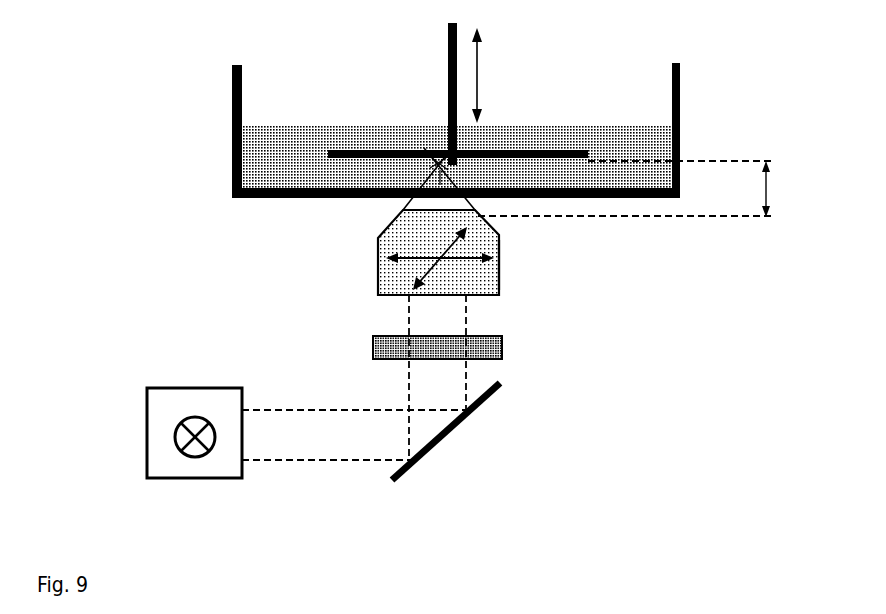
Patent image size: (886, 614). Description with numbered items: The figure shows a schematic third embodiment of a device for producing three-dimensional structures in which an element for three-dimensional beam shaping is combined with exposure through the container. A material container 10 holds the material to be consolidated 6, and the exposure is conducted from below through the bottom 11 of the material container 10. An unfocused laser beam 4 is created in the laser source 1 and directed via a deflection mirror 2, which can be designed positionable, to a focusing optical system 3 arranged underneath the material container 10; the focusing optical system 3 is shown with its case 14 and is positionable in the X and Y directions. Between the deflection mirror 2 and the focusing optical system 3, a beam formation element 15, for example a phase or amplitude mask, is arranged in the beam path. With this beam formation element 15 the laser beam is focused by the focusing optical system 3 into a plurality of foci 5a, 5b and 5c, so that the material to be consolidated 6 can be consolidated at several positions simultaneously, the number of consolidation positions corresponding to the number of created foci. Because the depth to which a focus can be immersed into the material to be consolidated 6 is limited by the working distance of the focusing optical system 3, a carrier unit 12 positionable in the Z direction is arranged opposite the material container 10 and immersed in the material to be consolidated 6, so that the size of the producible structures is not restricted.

The laser source 1 is at (163, 410).
The deflection mirror 2 is at (443, 440).
The focusing optical system 3 is at (478, 283).
The unfocused laser beam 4 is at (322, 443).
The focus 5a is at (435, 157).
The focus 5b is at (438, 152).
The focus 5c is at (463, 152).
The material to be consolidated 6 is at (623, 163).
The material container 10 is at (214, 167).
The bottom 11 is at (290, 198).
The carrier unit 12 is at (358, 150).
The case 14 is at (498, 267).
The beam formation element 15 is at (503, 357).